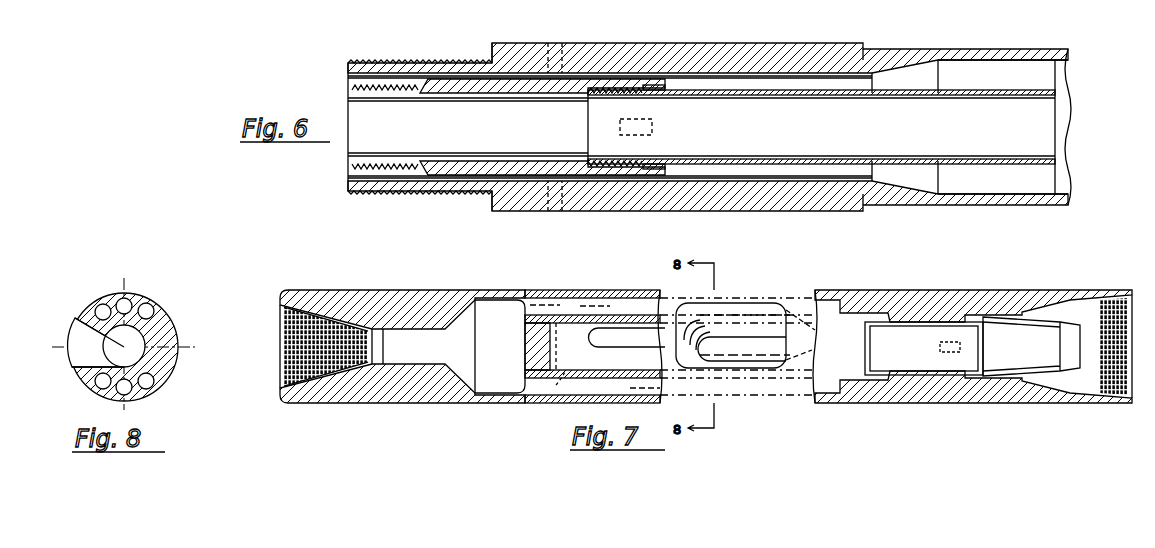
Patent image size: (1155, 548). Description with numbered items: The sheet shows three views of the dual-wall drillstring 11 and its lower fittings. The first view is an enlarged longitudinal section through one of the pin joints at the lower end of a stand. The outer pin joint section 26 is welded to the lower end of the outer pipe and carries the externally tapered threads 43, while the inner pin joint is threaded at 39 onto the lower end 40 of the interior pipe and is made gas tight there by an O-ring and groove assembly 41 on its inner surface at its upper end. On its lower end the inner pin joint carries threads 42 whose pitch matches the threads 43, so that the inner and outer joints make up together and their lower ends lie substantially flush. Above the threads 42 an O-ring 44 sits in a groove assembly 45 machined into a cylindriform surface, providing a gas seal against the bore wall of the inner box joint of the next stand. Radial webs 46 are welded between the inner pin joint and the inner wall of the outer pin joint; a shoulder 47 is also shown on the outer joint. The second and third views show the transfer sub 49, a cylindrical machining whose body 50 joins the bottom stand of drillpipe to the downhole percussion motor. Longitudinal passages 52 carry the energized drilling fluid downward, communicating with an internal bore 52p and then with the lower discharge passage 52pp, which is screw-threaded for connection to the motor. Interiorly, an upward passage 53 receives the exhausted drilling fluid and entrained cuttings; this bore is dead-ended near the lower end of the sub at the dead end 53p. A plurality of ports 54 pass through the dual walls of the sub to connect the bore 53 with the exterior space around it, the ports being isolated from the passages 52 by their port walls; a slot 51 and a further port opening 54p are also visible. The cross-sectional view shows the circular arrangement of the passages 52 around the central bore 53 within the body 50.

In FIG. 6, the drillstring 11 is at (946, 44).
In FIG. 6, the pin joint section 26 is at (672, 43).
In FIG. 6, the threads 39 is at (622, 158).
In FIG. 6, the lower end of interior pipe 40 is at (675, 159).
In FIG. 6, the O-ring and groove assembly 41 is at (664, 146).
In FIG. 6, the threads 42 is at (357, 88).
In FIG. 6, the threads 43 is at (438, 60).
In FIG. 6, the O-ring 44 is at (406, 161).
In FIG. 6, the groove assembly 45 is at (413, 180).
In FIG. 6, the radial webs 46 is at (566, 74).
In FIG. 6, the shoulder 47 is at (490, 43).
In FIG. 7, the transfer sub 49 is at (762, 284).
In FIG. 8, the transfer sub 49 is at (150, 278).
In FIG. 7, the body 50 is at (664, 300).
In FIG. 8, the body 50 is at (170, 372).
In FIG. 7, the slot 51 is at (608, 318).
In FIG. 8, the slot 51 is at (98, 337).
In FIG. 7, the longitudinal passages 52 is at (578, 305).
In FIG. 8, the longitudinal passages 52 is at (151, 305).
In FIG. 7, the internal bore 52p is at (466, 330).
In FIG. 7, the lower discharge passage 52pp is at (393, 335).
In FIG. 7, the upward passage 53 is at (840, 338).
In FIG. 8, the upward passage 53 is at (132, 330).
In FIG. 7, the dead end 53p is at (508, 325).
In FIG. 7, the ports 54 is at (752, 322).
In FIG. 8, the ports 54 is at (84, 313).
In FIG. 7, the key 54' 54p is at (562, 400).